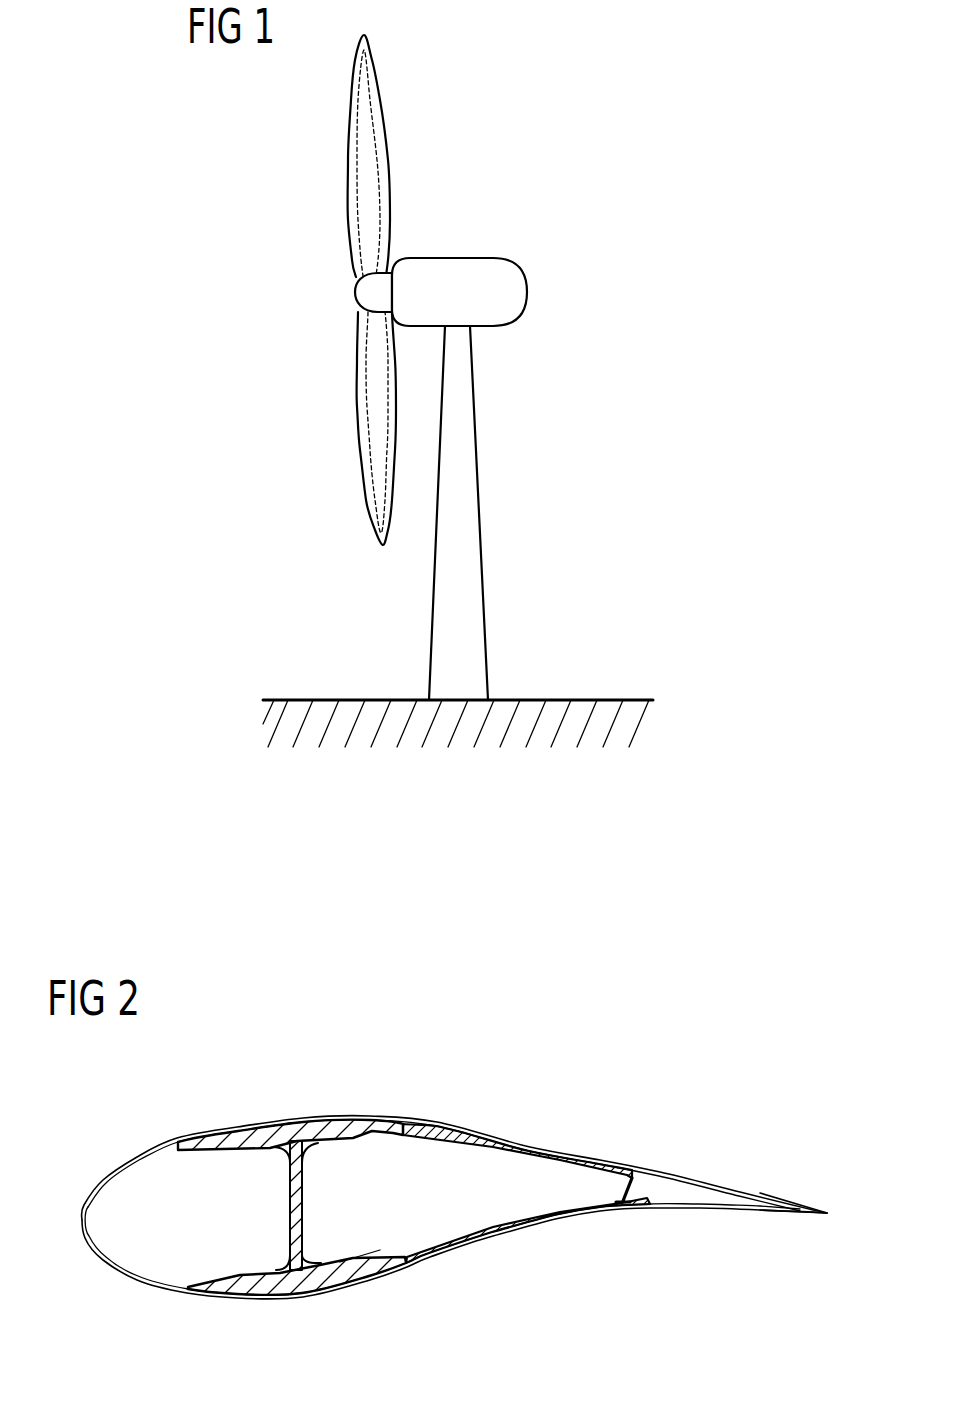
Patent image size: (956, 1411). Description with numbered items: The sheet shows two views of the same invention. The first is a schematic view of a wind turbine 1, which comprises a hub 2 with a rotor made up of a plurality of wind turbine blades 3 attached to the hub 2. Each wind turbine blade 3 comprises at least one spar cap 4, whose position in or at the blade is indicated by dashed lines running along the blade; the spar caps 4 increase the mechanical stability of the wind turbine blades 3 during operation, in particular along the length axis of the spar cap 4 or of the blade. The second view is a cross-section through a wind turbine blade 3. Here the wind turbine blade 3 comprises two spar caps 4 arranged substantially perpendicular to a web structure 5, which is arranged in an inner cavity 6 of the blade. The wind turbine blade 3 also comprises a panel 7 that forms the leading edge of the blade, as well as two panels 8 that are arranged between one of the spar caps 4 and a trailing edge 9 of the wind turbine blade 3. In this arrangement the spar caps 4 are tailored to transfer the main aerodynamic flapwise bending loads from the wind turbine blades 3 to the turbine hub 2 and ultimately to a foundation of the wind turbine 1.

In FIG. 1, the wind turbine 1 is at (458, 391).
In FIG. 1, the hub 2 is at (358, 291).
In FIG. 1, the wind turbine blade 3 is at (399, 290).
In FIG. 2, the wind turbine blade 3 is at (455, 1205).
In FIG. 1, the spar cap 4 is at (381, 163).
In FIG. 2, the spar cap 4 is at (222, 1132).
In FIG. 2, the web structure 5 is at (308, 1180).
In FIG. 2, the inner cavity 6 is at (387, 1230).
In FIG. 2, the panel 7 is at (127, 1166).
In FIG. 2, the panel 8 is at (488, 1141).
In FIG. 2, the trailing edge 9 is at (680, 1193).